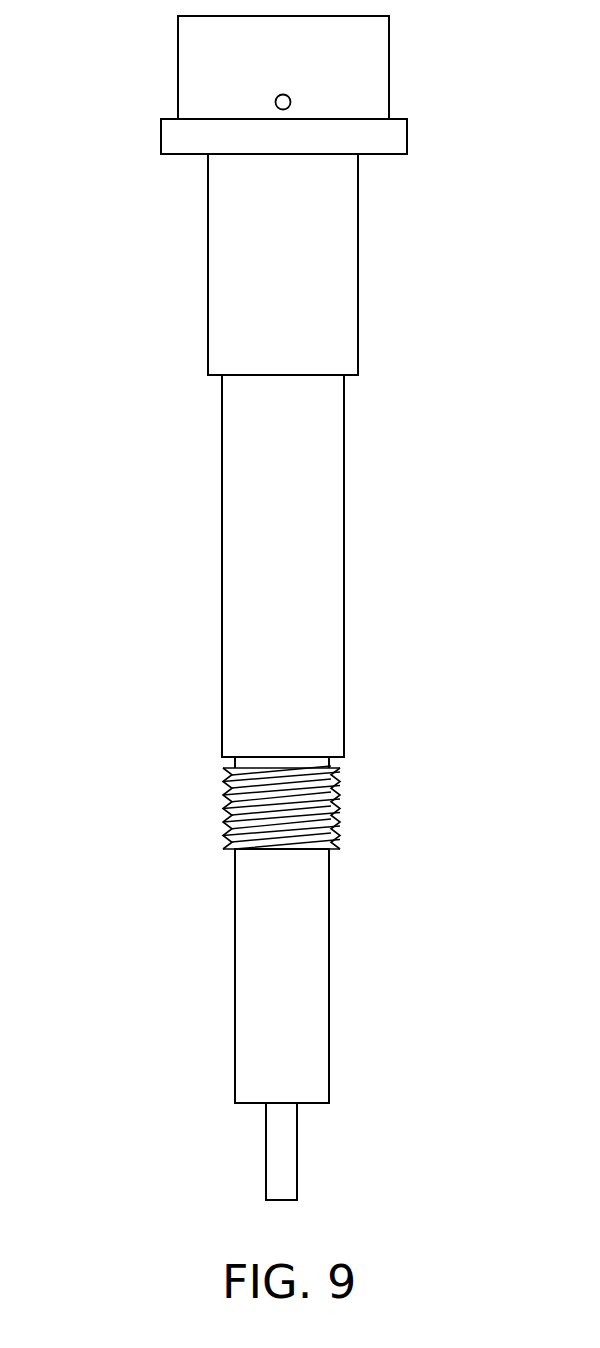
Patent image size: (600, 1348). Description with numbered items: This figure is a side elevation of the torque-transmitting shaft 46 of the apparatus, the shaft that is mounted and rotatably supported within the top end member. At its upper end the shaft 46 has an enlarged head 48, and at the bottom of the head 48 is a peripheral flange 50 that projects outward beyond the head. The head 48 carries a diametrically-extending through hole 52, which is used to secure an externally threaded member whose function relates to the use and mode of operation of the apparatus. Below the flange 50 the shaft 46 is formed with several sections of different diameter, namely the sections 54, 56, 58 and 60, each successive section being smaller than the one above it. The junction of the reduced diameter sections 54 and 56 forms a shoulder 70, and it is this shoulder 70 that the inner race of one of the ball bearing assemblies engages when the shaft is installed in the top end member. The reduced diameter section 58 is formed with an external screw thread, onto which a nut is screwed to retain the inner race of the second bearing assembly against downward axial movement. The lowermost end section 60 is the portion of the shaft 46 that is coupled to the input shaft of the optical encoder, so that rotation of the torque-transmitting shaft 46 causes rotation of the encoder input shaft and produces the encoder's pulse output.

The torque-transmitting shaft 46 is at (182, 481).
The enlarged head 48 is at (389, 83).
The peripheral flange 50 is at (407, 138).
The through hole 52 is at (275, 102).
The reduced diameter section 54 is at (358, 273).
The reduced diameter section 56 is at (344, 595).
The reduced diameter section 58 is at (329, 968).
The end section 60 is at (297, 1172).
The shoulder 70 is at (351, 378).